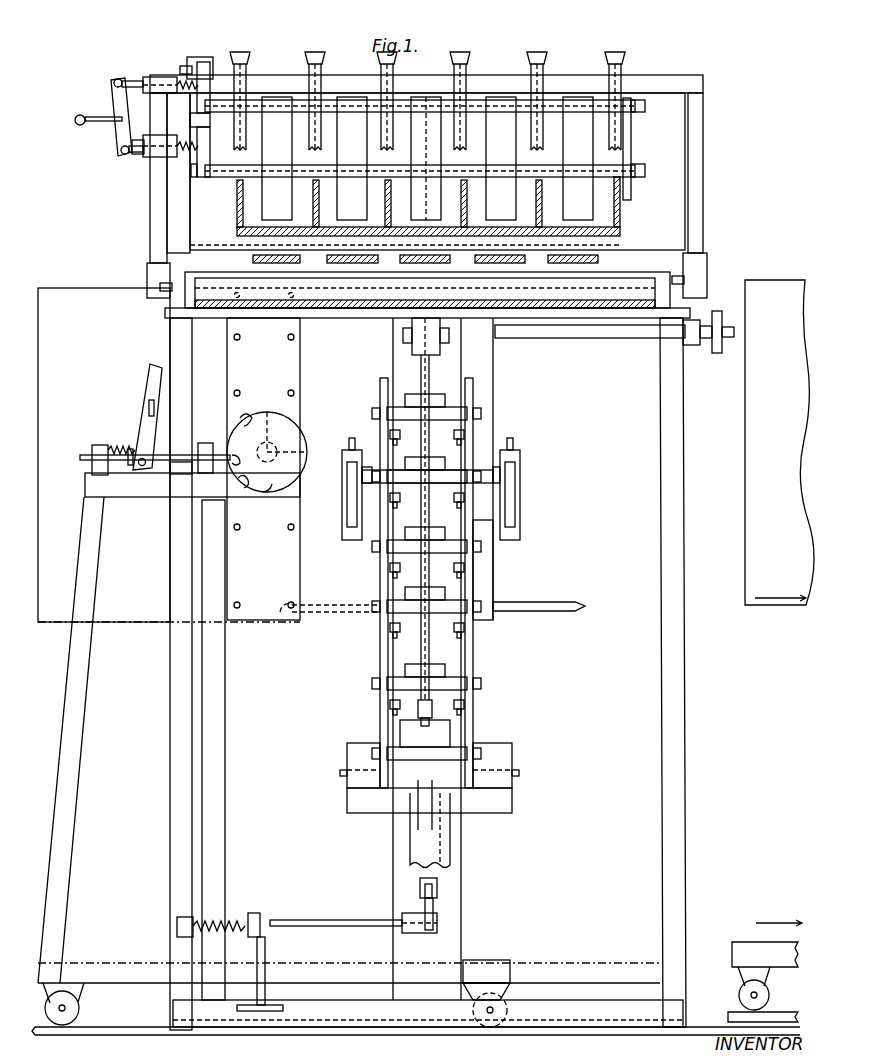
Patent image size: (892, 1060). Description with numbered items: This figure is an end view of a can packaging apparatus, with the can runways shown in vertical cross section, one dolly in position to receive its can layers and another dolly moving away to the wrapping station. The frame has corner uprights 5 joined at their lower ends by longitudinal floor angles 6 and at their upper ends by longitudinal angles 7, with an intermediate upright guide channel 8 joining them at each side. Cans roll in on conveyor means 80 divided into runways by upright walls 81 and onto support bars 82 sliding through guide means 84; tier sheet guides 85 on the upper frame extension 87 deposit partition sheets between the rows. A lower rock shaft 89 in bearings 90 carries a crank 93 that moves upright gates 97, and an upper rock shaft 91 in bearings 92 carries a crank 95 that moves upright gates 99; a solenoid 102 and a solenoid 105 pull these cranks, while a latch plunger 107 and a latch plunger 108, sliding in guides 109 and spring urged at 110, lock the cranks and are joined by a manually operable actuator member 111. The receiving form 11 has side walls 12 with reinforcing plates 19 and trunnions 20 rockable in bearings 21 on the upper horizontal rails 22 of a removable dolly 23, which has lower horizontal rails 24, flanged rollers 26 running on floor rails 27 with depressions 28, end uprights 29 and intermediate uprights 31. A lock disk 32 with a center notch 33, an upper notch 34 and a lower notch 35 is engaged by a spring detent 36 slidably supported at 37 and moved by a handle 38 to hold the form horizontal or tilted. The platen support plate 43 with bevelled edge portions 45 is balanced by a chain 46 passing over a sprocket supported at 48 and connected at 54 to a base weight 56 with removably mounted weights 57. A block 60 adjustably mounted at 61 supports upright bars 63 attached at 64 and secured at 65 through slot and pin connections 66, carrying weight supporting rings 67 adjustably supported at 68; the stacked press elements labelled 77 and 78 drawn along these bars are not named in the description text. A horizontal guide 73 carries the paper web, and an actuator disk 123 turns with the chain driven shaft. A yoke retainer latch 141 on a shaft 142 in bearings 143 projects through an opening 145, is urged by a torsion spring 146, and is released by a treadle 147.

The corner uprights 5 is at (678, 612).
The longitudinal floor angles 6 is at (570, 1010).
The longitudinal angles 7 is at (165, 313).
The intermediate upright guide channel 8 is at (463, 897).
The can complement receiving form 11 is at (498, 558).
The side walls 12 is at (118, 290).
The reinforcing plates 19 is at (292, 370).
The trunnions 20 is at (290, 440).
The bearings 21 is at (272, 412).
The upper horizontal rails 22 is at (95, 485).
The removable dolly 23 is at (55, 668).
The lower horizontal rails 24 is at (155, 952).
The flanged rollers 26 is at (80, 1008).
The floor rails 27 is at (148, 1016).
The depressions 28 is at (212, 1028).
The end uprights 29 is at (80, 707).
The intermediate uprights 31 is at (205, 745).
The lock disk 32 is at (272, 492).
The center notch 33 is at (232, 456).
The upper notch 34 is at (240, 415).
The lower notch 35 is at (245, 488).
The spring detent 36 is at (165, 475).
The detent support 37 is at (98, 446).
The handle 38 is at (148, 403).
The platen support plate 43 is at (525, 612).
The bevelled edge portions 45 is at (560, 602).
The chain 46 is at (421, 360).
The idler sprocket support 48 is at (445, 340).
The adjustable chain connection 54 is at (432, 712).
The base weight 56 is at (410, 855).
The removably mounted weights 57 is at (419, 822).
The block 60 is at (520, 468).
The adjustable mounting 61 is at (370, 440).
The upright bars 63 is at (475, 384).
The bar attachment 64 is at (365, 490).
The bracket securement 65 is at (350, 760).
The slot and pin connections 66 is at (340, 773).
The weight supporting rings 67 is at (397, 605).
The ring adjustable support 68 is at (475, 690).
The horizontal guide 73 is at (625, 292).
The press block 77 is at (433, 394).
The press plate 78 is at (405, 394).
The conveyor means 80 is at (616, 236).
The upright walls 81 is at (474, 180).
The support bars 82 is at (556, 264).
The guide means 84 is at (152, 262).
The tier sheet guides 85 is at (250, 66).
The upper frame extension 87 is at (152, 218).
The lower rock shaft 89 is at (612, 160).
The bearings 90 is at (212, 162).
The upper rock shaft 91 is at (645, 106).
The bearings 92 is at (240, 148).
The crank 93 is at (198, 175).
The crank 95 is at (182, 66).
The upright gates 97 is at (425, 200).
The upright gates 99 is at (433, 123).
The solenoid 102 is at (160, 135).
The solenoid 105 is at (190, 56).
The latch plunger 107 is at (136, 154).
The latch plunger 108 is at (114, 80).
The guides 109 is at (122, 85).
The plunger springs 110 is at (195, 72).
The manually operable actuator member 111 is at (115, 107).
The actuator disk 123 is at (718, 353).
The yoke retainer latch 141 is at (440, 916).
The shaft 142 is at (337, 926).
The bearings 143 is at (405, 933).
The opening 145 is at (437, 884).
The torsion spring 146 is at (205, 920).
The treadle 147 is at (283, 1008).